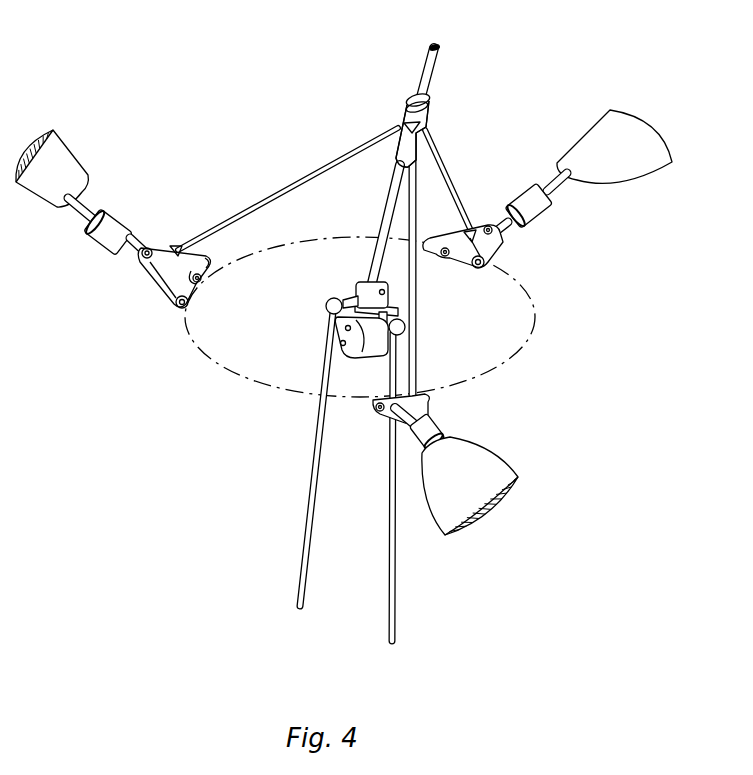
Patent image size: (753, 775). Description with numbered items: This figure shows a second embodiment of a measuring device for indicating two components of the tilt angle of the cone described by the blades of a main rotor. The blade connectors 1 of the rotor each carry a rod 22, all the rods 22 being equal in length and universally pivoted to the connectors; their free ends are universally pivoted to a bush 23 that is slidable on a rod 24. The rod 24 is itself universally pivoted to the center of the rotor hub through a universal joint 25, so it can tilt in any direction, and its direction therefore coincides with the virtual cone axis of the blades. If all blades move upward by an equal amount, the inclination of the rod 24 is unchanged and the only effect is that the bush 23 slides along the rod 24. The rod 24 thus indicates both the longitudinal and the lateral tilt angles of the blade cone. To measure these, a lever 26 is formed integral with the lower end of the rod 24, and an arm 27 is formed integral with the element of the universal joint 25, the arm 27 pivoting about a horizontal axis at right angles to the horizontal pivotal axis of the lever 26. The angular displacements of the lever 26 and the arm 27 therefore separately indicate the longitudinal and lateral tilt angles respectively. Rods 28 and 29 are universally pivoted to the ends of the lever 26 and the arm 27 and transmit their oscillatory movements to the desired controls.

The blade connector 1 is at (160, 252).
The rod 22 is at (333, 162).
The bush 23 is at (409, 107).
The rod 24 is at (439, 58).
The universal joint 25 is at (370, 310).
The lever 26 is at (352, 299).
The arm 27 is at (388, 320).
The rod 28 is at (313, 469).
The rod 29 is at (391, 500).